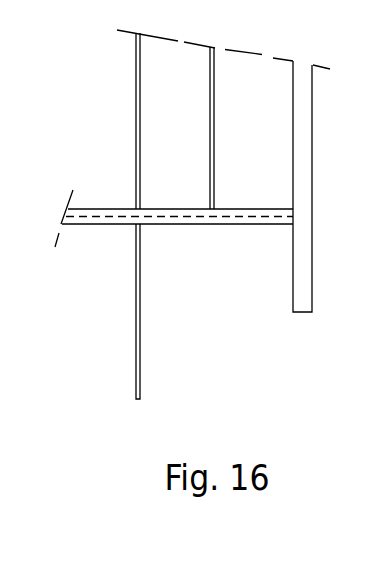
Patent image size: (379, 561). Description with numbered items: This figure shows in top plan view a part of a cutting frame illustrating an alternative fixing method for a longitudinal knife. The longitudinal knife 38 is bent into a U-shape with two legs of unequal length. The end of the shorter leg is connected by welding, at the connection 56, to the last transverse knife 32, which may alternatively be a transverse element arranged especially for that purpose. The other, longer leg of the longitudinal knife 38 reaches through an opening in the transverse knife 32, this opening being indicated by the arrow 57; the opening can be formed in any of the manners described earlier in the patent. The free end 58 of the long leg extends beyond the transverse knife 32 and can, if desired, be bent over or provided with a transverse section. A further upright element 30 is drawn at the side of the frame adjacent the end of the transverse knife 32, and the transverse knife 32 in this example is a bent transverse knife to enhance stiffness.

The support post 30 is at (303, 288).
The transverse knife 32 is at (98, 226).
The longitudinal knife 38 is at (140, 72).
The welded connection 56 is at (209, 208).
The opening in the transverse knife 57 is at (131, 203).
The free end of the long leg 58 is at (140, 352).